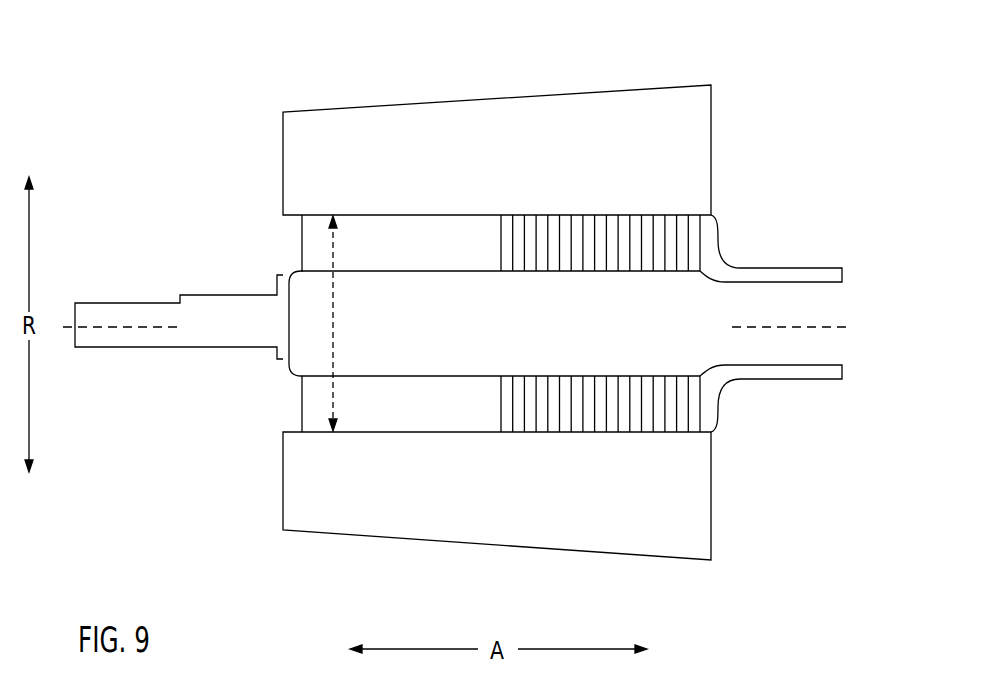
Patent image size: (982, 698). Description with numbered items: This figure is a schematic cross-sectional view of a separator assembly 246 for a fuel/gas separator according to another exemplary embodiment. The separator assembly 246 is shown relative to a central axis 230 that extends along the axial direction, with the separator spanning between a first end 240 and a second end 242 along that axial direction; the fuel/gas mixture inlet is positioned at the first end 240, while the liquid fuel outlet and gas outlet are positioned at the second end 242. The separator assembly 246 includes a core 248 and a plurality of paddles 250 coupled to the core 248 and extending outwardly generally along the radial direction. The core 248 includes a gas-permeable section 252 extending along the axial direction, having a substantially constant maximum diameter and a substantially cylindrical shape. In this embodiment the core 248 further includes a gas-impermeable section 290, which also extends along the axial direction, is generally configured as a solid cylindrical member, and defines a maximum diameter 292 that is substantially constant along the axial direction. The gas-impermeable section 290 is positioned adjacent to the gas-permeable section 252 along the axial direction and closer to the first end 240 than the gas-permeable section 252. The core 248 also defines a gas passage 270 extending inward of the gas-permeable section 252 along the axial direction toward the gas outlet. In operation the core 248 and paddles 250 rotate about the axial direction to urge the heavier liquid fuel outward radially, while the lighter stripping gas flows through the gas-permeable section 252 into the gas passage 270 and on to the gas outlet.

The central axis 230 is at (787, 327).
The first end 240 is at (209, 216).
The second end 242 is at (760, 196).
The separator assembly 246 is at (681, 75).
The core 248 is at (668, 450).
The paddles 250 is at (413, 510).
The gas-permeable section 252 is at (597, 212).
The gas passage 270 is at (527, 332).
The gas-impermeable section 290 is at (400, 233).
The maximum diameter 292 is at (333, 315).